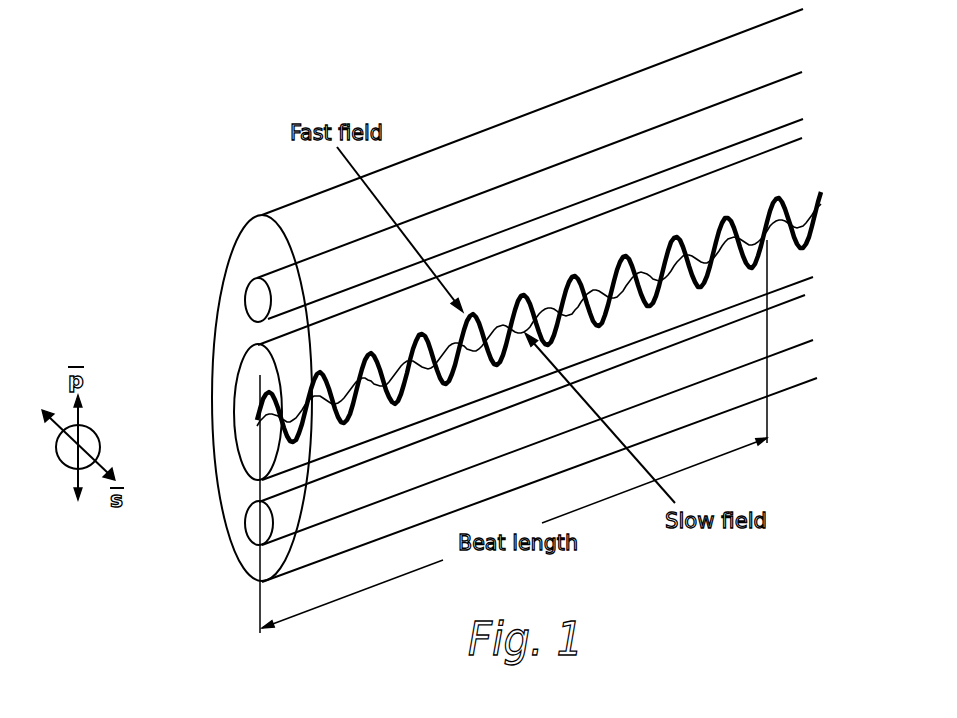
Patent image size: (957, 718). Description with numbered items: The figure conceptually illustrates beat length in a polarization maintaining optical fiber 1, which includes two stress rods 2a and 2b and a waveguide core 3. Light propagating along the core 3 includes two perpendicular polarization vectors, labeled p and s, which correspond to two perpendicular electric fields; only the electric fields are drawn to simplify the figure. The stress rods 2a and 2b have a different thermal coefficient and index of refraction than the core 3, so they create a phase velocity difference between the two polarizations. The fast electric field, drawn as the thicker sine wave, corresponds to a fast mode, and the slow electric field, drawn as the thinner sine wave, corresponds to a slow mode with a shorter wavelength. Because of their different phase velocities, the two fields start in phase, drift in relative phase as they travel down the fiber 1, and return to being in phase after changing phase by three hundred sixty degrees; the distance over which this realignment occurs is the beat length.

The polarization maintaining optical fiber 1 is at (597, 86).
The stress rod 2a is at (582, 152).
The stress rod 2b is at (650, 402).
The waveguide core 3 is at (667, 190).